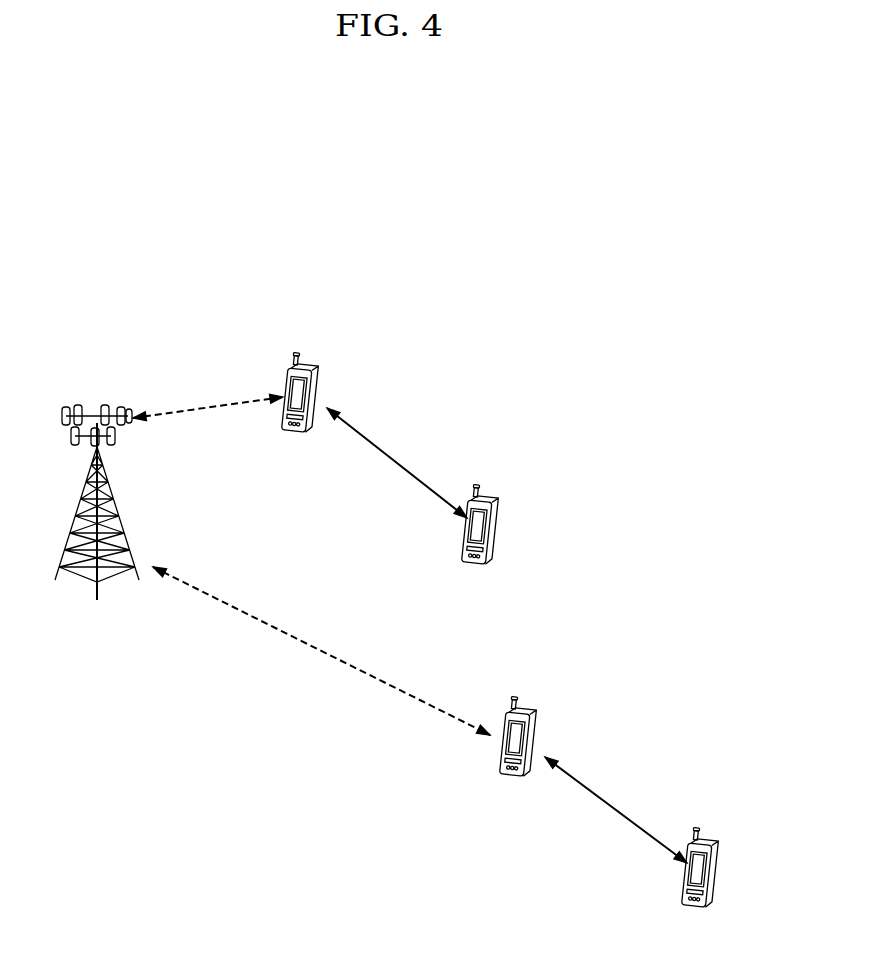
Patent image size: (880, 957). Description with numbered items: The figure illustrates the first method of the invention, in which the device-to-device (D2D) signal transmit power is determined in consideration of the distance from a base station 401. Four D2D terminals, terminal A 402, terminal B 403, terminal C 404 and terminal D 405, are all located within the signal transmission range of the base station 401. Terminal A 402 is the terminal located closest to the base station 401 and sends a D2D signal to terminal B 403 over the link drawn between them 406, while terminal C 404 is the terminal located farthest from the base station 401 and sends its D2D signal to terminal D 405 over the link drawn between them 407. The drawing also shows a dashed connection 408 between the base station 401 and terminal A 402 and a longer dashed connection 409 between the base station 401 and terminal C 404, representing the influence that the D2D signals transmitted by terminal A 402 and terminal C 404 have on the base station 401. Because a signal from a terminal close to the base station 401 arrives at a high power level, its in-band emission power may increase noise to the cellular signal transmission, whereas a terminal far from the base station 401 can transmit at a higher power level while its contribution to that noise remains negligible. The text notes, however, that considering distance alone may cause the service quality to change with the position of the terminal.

The base station 401 is at (77, 507).
The terminal A 402 is at (310, 362).
The terminal B 403 is at (497, 497).
The terminal C 404 is at (527, 708).
The terminal D 405 is at (714, 846).
The D2D link between terminal A and terminal B 406 is at (396, 462).
The D2D link between terminal C and terminal D 407 is at (613, 807).
The cellular link between base station and terminal A 408 is at (212, 407).
The cellular link between base station and terminal C 409 is at (322, 650).